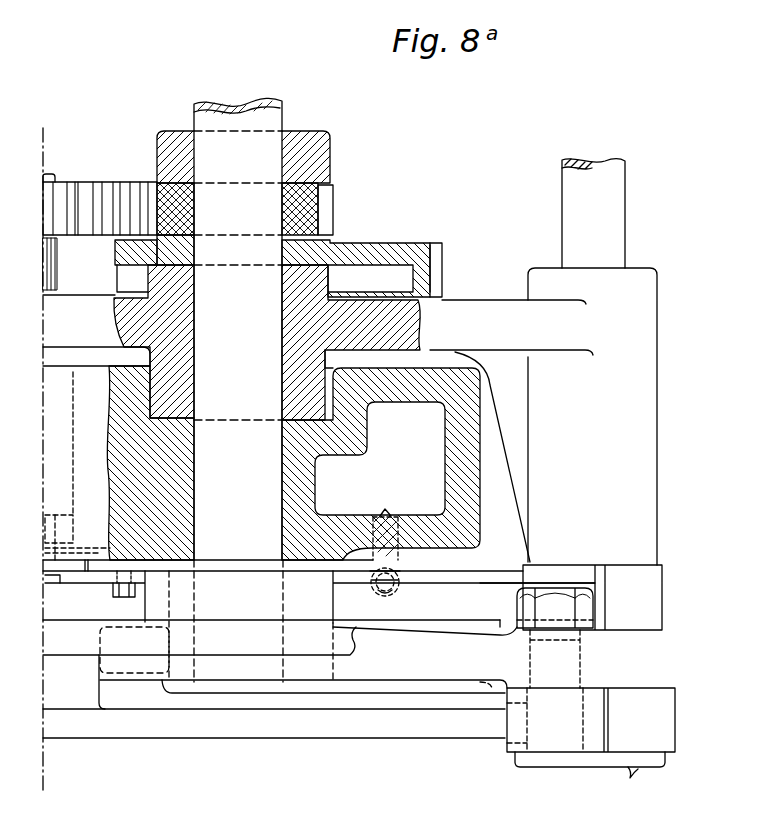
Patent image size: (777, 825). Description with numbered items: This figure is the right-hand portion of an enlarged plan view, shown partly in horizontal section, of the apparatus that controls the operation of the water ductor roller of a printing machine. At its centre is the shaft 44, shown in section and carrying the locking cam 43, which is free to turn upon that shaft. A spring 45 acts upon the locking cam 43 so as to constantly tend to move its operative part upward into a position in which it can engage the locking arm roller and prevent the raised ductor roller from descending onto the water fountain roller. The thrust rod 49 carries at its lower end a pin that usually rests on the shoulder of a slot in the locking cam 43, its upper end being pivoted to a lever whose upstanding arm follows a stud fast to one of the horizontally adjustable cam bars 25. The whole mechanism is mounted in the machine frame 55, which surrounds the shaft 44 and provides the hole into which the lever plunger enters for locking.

The shaft 44 is at (238, 390).
The machine frame 55 is at (486, 531).
The locking cam 43 is at (244, 573).
The thrust rod 49 is at (111, 578).
The spring 45 is at (403, 590).
The cam bars 25 is at (275, 682).